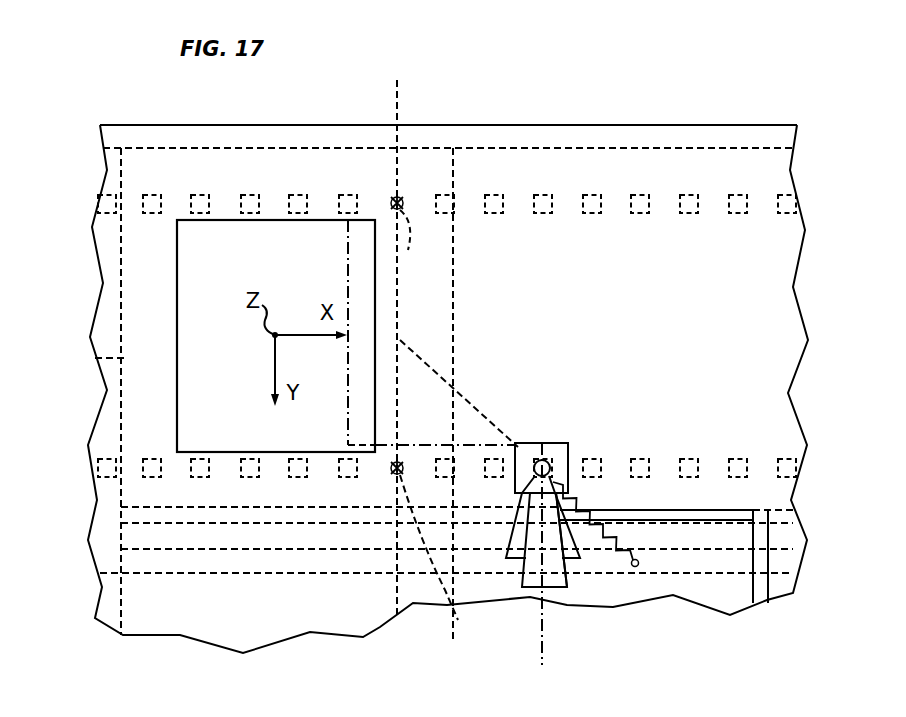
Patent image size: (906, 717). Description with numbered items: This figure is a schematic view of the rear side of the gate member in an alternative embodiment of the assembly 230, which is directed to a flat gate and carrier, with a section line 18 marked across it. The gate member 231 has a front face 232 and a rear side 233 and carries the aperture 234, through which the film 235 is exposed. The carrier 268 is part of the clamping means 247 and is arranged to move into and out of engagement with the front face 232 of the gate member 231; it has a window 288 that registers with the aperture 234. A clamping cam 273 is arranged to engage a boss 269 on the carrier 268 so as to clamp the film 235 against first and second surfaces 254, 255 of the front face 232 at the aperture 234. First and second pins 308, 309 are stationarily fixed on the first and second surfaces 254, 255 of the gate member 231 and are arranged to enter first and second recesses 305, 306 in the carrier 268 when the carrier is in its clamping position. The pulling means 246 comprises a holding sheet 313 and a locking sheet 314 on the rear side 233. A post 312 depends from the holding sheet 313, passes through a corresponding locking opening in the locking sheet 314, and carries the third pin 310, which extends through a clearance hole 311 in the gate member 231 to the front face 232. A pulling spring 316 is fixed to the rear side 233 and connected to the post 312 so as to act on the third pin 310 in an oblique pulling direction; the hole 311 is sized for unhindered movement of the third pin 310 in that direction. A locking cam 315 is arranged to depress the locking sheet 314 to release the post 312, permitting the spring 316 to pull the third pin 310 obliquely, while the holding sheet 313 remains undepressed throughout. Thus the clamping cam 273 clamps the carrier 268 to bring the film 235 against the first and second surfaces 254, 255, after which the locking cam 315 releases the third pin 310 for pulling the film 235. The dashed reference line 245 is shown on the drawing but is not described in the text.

The section line 18- 18 is at (397, 80).
The assembly 230 is at (588, 104).
The gate member 231 is at (750, 137).
The front face 232 is at (678, 137).
The rear side 233 is at (725, 137).
The aperture 234 is at (375, 272).
The film 235 is at (645, 212).
The dashed reference line 245 is at (415, 207).
The pulling means 246 is at (565, 572).
The clamping means 247 is at (125, 312).
The first surface 254 is at (140, 173).
The second surface 255 is at (128, 490).
The carrier 268 is at (125, 358).
The boss 269 is at (268, 555).
The clamping cam 273 is at (183, 575).
The window 288 is at (177, 265).
The first recess 305 is at (392, 195).
The second recess 306 is at (385, 478).
The first pin 308 is at (424, 246).
The second pin 309 is at (459, 494).
The third pin 310 is at (565, 456).
The clearance hole 311 is at (552, 470).
The post 312 is at (548, 460).
The holding sheet 313 is at (532, 580).
The locking sheet 314 is at (518, 547).
The locking cam 315 is at (700, 513).
The pulling spring 316 is at (610, 547).